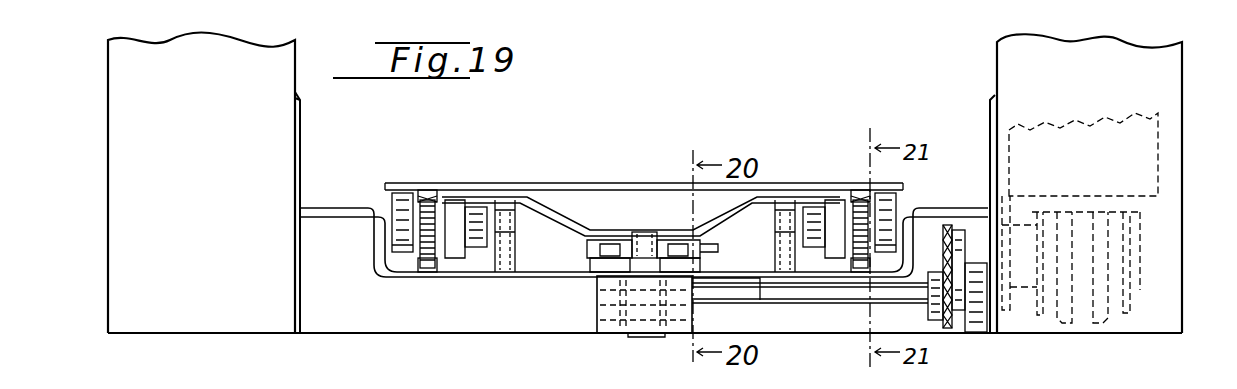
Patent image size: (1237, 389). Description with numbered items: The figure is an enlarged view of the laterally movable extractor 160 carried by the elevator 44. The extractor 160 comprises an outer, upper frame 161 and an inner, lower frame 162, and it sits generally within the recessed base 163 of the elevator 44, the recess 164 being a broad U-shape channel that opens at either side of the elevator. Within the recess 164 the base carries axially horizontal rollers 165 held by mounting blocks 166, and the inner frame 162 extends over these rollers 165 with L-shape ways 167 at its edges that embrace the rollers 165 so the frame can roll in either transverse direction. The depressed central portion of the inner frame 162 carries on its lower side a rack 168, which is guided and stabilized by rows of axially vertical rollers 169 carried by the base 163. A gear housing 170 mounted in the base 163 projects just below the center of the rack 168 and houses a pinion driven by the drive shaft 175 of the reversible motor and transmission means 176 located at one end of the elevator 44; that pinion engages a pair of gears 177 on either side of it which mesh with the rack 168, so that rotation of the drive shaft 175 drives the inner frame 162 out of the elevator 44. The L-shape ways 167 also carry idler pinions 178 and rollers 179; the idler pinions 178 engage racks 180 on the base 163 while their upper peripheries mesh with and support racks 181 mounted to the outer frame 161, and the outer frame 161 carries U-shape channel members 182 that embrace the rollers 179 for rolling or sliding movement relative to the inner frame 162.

The elevator 44 is at (232, 183).
The extractor 160 is at (640, 175).
The outer frame 161 is at (580, 182).
The inner frame 162 is at (570, 222).
The recessed base 163 is at (332, 207).
The recess 164 is at (535, 270).
The rollers 165 is at (476, 208).
The mounting blocks 166 is at (510, 208).
The L-shape ways 167 is at (465, 262).
The rack 168 is at (648, 232).
The axially vertical rollers 169 is at (718, 250).
The gear housing 170 is at (597, 321).
The drive shaft 175 is at (822, 290).
The motor and transmission means 176 is at (1099, 242).
The gears 177 is at (630, 336).
The idler pinions 178 is at (432, 200).
The rollers 179 is at (400, 195).
The racks 180 is at (420, 262).
The racks 181 is at (428, 198).
The U-shape channel members 182 is at (392, 232).